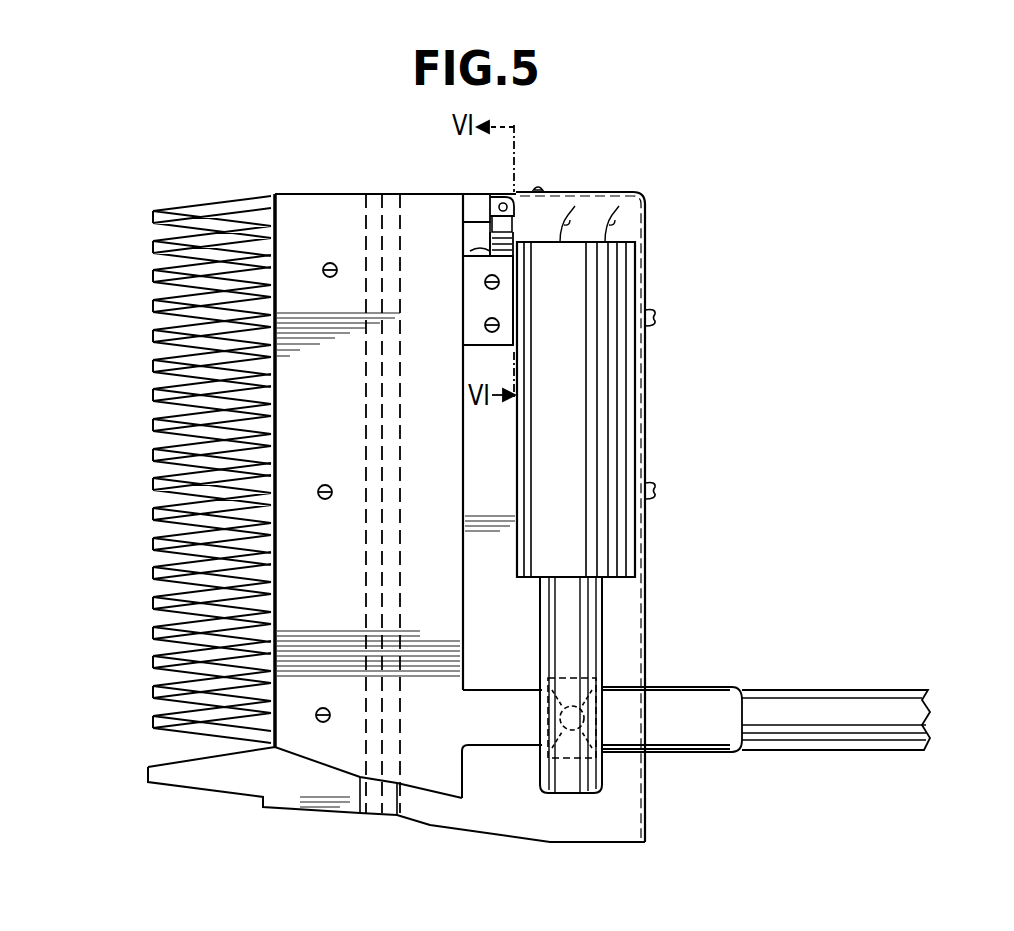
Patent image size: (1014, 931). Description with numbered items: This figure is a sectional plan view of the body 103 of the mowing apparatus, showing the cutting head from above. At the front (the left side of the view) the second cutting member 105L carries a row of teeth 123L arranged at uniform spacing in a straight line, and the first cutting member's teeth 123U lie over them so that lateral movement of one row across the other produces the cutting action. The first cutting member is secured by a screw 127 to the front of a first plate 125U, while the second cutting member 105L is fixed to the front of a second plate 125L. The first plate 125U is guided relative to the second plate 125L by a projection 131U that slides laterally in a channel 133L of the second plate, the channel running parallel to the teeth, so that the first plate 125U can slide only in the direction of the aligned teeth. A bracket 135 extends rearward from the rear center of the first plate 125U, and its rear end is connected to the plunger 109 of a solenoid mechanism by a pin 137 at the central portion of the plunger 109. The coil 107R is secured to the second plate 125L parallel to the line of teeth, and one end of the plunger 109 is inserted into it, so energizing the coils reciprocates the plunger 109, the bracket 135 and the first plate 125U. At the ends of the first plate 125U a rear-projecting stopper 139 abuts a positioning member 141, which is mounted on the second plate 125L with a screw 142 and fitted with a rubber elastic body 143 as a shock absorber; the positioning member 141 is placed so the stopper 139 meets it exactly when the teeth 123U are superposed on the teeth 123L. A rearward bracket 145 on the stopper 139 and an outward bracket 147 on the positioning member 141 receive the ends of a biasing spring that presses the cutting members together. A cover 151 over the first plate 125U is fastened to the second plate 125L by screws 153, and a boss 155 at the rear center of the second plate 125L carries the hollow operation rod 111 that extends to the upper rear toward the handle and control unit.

The body 103 is at (788, 533).
The second cutting member 105L is at (305, 796).
The coil 107R is at (607, 436).
The plunger 109 is at (588, 606).
The hollow operation rod 111 is at (826, 725).
The teeth 123U is at (153, 451).
The teeth 123L is at (153, 484).
The first plate 125U is at (437, 733).
The second plate 125L is at (408, 812).
The screw 127 is at (325, 480).
The projection 131U is at (380, 583).
The channel 133L is at (380, 540).
The bracket 135 is at (500, 718).
The pin 137 is at (640, 680).
The stopper 139 is at (482, 217).
The positioning member 141 is at (483, 303).
The screw 142 is at (500, 325).
The elastic body 143 is at (467, 247).
The bracket 145 is at (497, 203).
The bracket 147 is at (503, 226).
The cover 151 is at (650, 216).
The screw 153 is at (656, 318).
The boss 155 is at (660, 735).